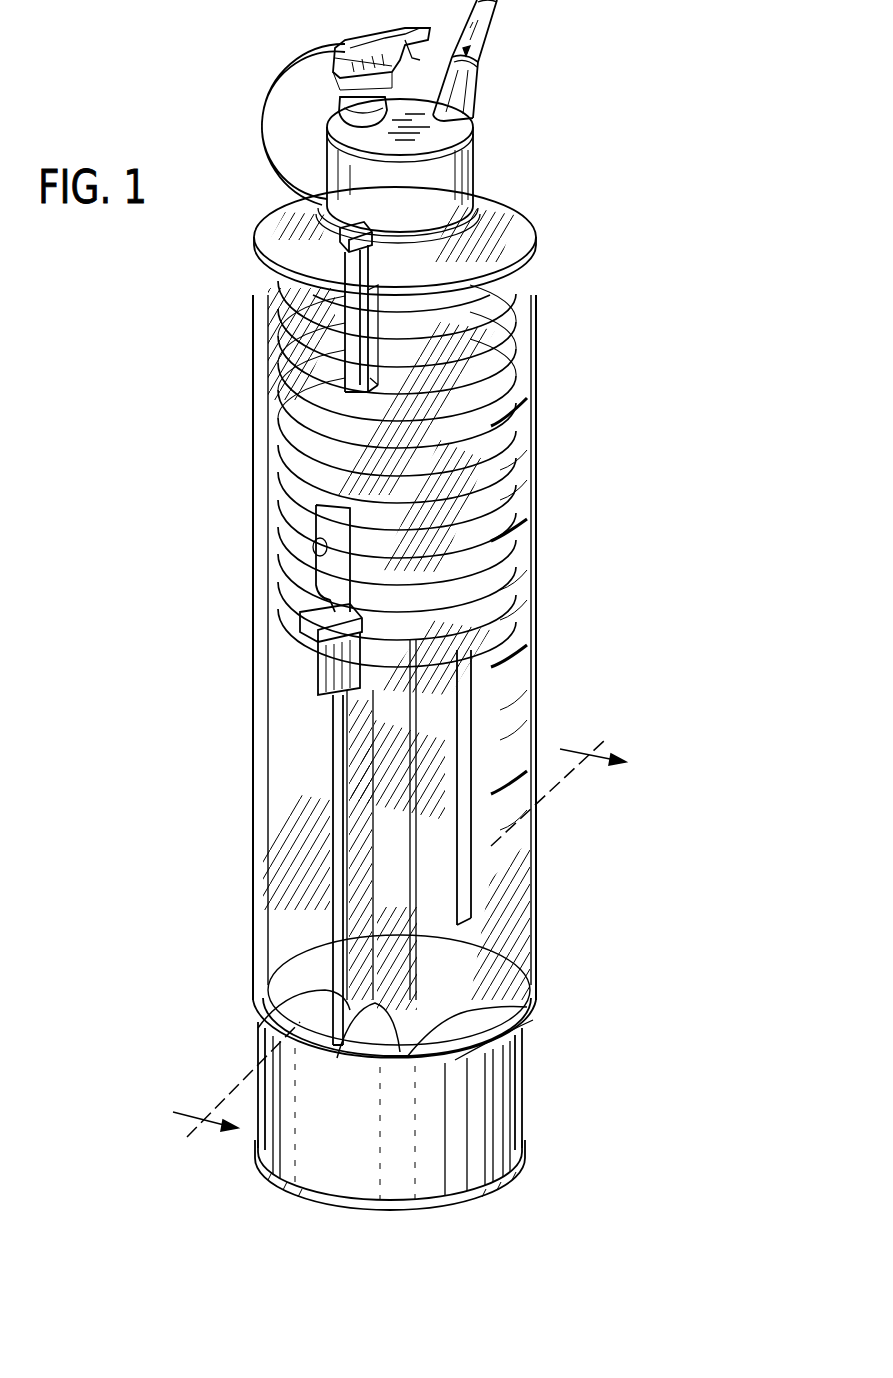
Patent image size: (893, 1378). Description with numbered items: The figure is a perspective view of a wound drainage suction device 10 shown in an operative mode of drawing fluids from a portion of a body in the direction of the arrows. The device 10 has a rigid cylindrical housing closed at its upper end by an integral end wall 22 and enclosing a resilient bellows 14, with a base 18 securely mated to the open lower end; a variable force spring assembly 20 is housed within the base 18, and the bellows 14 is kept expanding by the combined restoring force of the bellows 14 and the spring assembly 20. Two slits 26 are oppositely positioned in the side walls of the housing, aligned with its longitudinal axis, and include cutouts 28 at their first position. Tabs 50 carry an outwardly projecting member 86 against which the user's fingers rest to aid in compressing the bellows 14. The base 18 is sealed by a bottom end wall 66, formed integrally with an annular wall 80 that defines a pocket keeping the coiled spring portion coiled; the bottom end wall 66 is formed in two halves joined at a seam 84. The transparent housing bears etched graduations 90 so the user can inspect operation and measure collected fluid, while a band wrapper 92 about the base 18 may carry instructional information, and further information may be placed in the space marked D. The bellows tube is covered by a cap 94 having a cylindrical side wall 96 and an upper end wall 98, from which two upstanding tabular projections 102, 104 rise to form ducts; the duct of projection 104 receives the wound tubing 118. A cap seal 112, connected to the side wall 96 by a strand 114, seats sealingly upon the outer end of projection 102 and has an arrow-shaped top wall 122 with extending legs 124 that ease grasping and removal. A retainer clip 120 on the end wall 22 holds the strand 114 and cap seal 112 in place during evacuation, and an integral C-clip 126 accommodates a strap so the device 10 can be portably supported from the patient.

The suction device 10 is at (571, 172).
The resilient bellows 14 is at (281, 465).
The base 18 is at (518, 1102).
The variable force spring assembly 20 is at (403, 963).
The end wall 22 is at (503, 233).
The slits 26 is at (337, 760).
The cutouts 28 is at (318, 557).
The tabs 50 is at (330, 667).
The bottom end wall 66 is at (497, 1187).
The annular wall 80 is at (440, 1033).
The seam 84 is at (347, 428).
The outwardly projecting member 86 is at (318, 622).
The etched graduations 90 is at (512, 425).
The band wrapper 92 is at (487, 1087).
The cap 94 is at (487, 135).
The cylindrical side wall 96 is at (467, 163).
The upper end wall 98 is at (383, 138).
The tabular projection 102 is at (358, 112).
The tabular projection 104 is at (463, 100).
The cap seal 112 is at (330, 82).
The strand 114 is at (257, 122).
The wound tubing 118 is at (487, 33).
The retainer clip 120 is at (345, 238).
The arrow-shaped top wall 122 is at (358, 47).
The extending legs 124 is at (415, 46).
The C-clip 126 is at (353, 352).